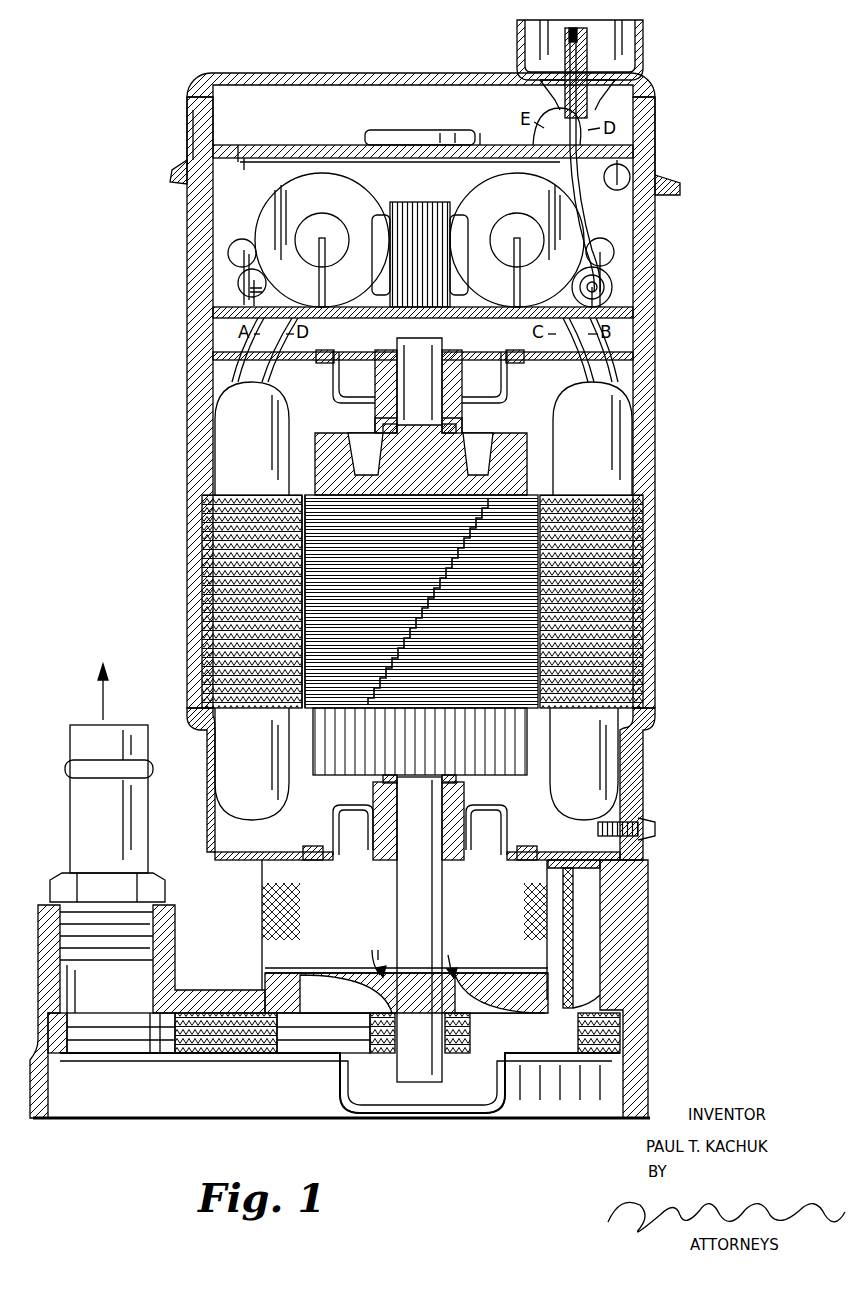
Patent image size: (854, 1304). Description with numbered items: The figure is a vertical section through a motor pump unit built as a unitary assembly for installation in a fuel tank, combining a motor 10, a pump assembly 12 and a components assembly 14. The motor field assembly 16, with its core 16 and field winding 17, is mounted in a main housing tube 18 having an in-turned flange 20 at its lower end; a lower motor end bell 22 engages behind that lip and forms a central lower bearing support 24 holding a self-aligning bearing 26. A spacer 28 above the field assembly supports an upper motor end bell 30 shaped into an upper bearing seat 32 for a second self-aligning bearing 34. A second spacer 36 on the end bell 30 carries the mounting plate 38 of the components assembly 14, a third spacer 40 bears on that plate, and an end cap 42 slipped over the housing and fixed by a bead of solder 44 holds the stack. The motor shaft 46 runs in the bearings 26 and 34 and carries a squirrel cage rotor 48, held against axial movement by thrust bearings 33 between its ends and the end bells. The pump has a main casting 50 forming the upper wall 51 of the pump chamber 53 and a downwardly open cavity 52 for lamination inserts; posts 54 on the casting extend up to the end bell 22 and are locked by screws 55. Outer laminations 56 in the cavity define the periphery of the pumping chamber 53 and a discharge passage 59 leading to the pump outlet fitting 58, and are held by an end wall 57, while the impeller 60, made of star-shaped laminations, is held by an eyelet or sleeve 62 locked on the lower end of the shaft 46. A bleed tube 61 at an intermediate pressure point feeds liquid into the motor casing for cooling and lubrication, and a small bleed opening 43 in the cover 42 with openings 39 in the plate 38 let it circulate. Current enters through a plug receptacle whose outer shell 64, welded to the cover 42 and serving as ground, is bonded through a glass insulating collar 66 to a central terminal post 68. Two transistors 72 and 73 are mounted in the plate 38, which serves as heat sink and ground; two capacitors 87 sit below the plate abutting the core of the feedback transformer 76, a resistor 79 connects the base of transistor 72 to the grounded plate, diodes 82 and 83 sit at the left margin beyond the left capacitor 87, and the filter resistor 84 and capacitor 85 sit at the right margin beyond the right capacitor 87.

The motor 10 is at (690, 507).
The pump assembly 12 is at (656, 937).
The components assembly 14 is at (665, 237).
The motor field assembly 16 is at (622, 602).
The field winding 17 is at (584, 447).
The main housing tube 18 is at (648, 540).
The in-turned flange 20 is at (645, 725).
The lower motor end bell 22 is at (646, 792).
The lower bearing support 24 is at (505, 820).
The self-aligning bearing 26 is at (385, 810).
The spacer 28 is at (638, 390).
The upper motor end bell 30 is at (625, 352).
The upper bearing seat 32 is at (498, 402).
The thrust bearings 33 is at (383, 428).
The self-aligning bearing 34 is at (464, 372).
The second spacer 36 is at (193, 240).
The mounting plate 38 is at (305, 145).
The mounting panel 39 is at (248, 160).
The third spacer 40 is at (215, 100).
The end cap 42 is at (396, 73).
The bleed opening 43 is at (244, 73).
The bead of solder 44 is at (178, 178).
The motor shaft 46 is at (428, 348).
The squirrel cage rotor 48 is at (393, 590).
The main casting 50 is at (626, 968).
The upper wall 51 is at (502, 985).
The cavity 52 is at (612, 1108).
The pump chamber 53 is at (373, 975).
The posts 54 is at (648, 892).
The screws 55 is at (652, 830).
The outer laminations 56 is at (67, 1045).
The end wall 57 is at (186, 1064).
The pump outlet fitting 58 is at (118, 830).
The discharge passage 59 is at (132, 1045).
The pump impeller 60 is at (320, 1066).
The bleed tube 61 is at (556, 960).
The eyelet or sleeve 62 is at (456, 975).
The outer shell 64 is at (643, 50).
The glass insulating collar 66 is at (590, 78).
The central terminal post 68 is at (567, 34).
The transistor 72 is at (428, 133).
The transistor 73 is at (485, 143).
The transformer 76 is at (409, 206).
The resistor 79 is at (617, 190).
The diode 82 is at (240, 240).
The diode 83 is at (240, 283).
The filter resistor 84 is at (604, 245).
The capacitor 85 is at (612, 285).
The capacitors 87 is at (332, 206).